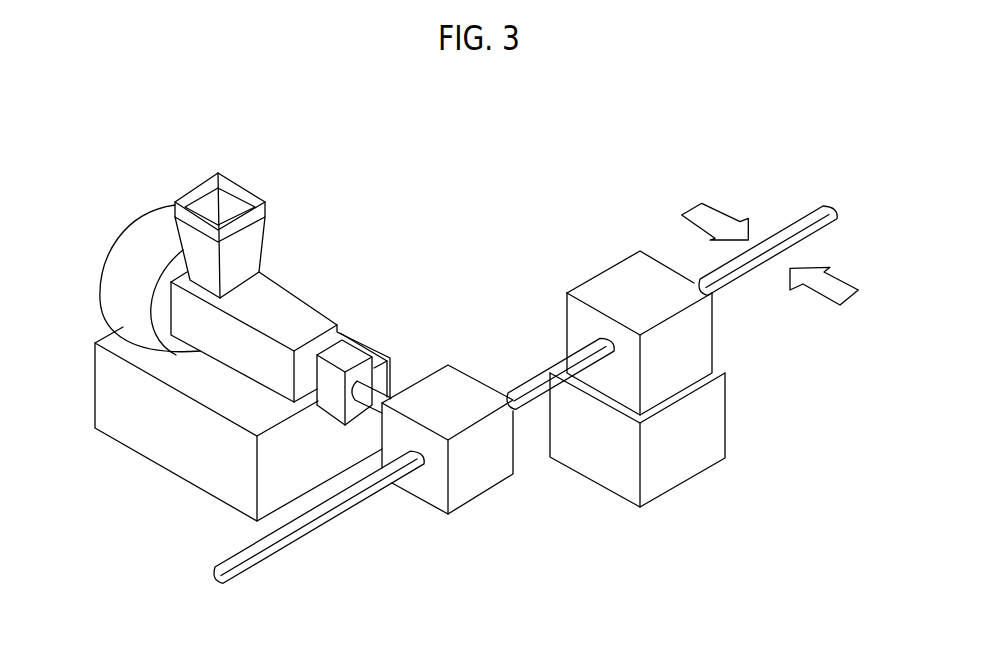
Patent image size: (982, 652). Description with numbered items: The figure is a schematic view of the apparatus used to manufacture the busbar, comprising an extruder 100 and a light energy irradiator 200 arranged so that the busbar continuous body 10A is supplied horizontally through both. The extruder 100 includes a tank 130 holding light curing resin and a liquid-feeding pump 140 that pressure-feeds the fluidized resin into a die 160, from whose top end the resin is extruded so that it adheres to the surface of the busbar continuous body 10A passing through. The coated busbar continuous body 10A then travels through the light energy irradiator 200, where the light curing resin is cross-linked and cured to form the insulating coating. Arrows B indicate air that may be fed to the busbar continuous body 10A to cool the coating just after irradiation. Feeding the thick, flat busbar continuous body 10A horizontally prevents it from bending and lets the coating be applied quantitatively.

The extruder 100 is at (389, 300).
The tank 130 is at (253, 247).
The liquid-feeding pump 140 is at (228, 348).
The die 160 is at (485, 457).
The light energy irradiator 200 is at (698, 342).
The busbar continuous body 10A is at (255, 547).
The arrows B is at (827, 293).